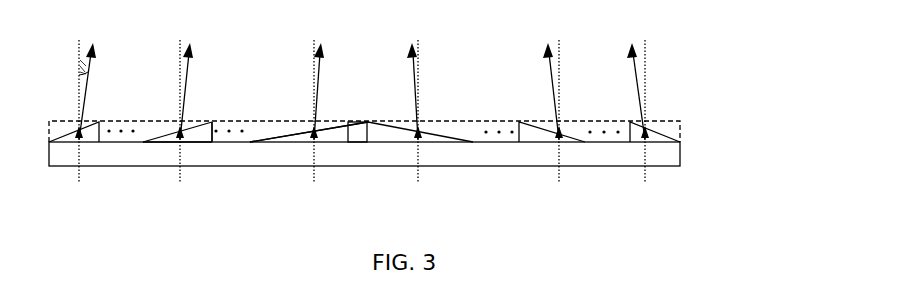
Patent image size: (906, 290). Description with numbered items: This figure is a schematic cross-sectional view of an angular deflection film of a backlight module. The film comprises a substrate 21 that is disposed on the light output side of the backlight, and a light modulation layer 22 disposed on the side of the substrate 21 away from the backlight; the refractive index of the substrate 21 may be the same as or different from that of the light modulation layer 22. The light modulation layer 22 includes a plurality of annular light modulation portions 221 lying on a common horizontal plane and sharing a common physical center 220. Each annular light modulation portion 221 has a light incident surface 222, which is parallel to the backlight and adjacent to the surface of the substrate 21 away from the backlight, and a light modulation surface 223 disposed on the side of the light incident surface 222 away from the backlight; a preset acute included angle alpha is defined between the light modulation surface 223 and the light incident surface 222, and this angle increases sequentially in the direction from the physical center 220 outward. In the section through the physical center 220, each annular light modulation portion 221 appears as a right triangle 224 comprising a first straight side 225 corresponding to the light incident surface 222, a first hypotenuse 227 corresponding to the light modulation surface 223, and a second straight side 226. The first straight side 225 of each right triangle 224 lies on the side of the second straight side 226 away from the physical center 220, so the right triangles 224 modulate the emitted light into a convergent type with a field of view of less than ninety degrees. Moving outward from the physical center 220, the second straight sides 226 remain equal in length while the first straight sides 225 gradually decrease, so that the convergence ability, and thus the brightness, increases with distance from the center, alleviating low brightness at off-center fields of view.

The substrate 21 is at (663, 155).
The light modulation layer 22 is at (680, 128).
The physical center 220 is at (367, 143).
The annular light modulation portion 221 is at (533, 135).
The light incident surface 222 is at (337, 143).
The light modulation surface 223 is at (349, 122).
The right triangle 224 is at (212, 122).
The first straight side 225 is at (200, 143).
The second straight side 226 is at (217, 143).
The first hypotenuse 227 is at (155, 138).